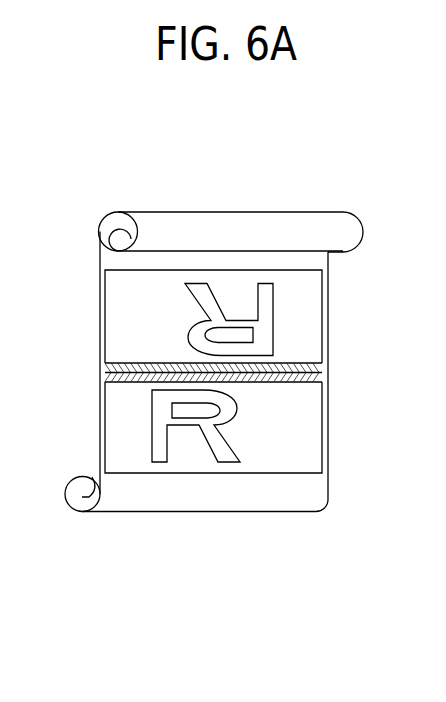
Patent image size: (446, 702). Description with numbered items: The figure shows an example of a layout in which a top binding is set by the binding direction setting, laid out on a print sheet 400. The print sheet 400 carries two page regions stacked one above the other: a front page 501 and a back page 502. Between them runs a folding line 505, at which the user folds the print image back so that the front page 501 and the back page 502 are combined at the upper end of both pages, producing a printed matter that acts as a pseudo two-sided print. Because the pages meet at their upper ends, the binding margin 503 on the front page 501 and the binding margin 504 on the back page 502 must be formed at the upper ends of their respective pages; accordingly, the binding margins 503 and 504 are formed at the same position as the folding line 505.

The print sheet 400 is at (185, 211).
The front page 501 is at (322, 283).
The back page 502 is at (323, 450).
The binding margin 503 is at (302, 363).
The binding margin 504 is at (302, 382).
The folding line 505 is at (328, 372).